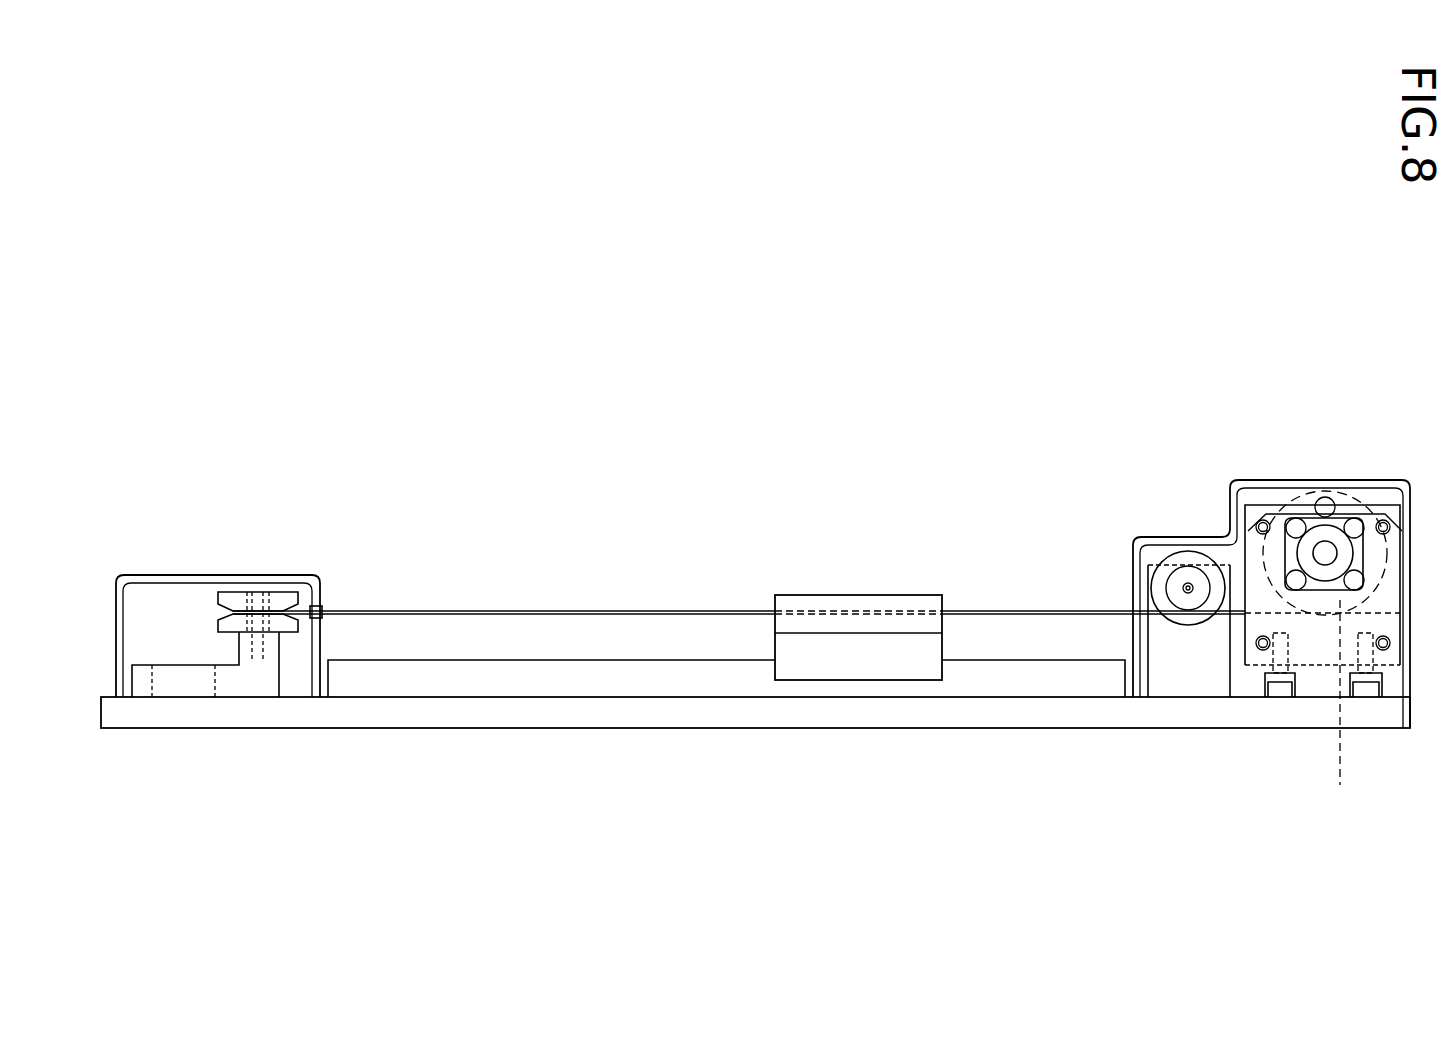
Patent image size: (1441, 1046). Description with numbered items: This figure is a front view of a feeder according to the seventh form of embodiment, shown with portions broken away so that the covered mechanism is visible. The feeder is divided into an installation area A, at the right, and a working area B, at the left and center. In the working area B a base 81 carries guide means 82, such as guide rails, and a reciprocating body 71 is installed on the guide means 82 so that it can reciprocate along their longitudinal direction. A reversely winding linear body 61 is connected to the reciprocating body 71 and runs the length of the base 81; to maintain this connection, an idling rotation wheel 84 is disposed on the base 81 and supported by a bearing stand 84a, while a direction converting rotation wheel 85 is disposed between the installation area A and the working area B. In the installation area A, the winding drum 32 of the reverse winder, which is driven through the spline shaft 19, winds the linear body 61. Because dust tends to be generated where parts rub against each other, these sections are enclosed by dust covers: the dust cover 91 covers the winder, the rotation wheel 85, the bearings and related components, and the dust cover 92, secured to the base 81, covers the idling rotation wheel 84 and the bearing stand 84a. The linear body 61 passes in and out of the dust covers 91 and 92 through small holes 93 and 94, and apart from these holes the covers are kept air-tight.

The spline shaft 19 is at (1325, 553).
The winding drum 32 is at (1339, 711).
The reversely winding linear body 61 is at (517, 610).
The reciprocating body 71 is at (777, 593).
The base 81 is at (567, 717).
The guide means 82 is at (472, 682).
The idling rotation wheel 84 is at (235, 592).
The bearing stand 84a is at (263, 680).
The direction converting rotation wheel 85 is at (1180, 620).
The dust cover 91 is at (1262, 485).
The dust cover 92 is at (157, 580).
The small hole 93 is at (1127, 585).
The small hole 94 is at (323, 605).
The installation area A is at (1270, 818).
The working area B is at (870, 818).